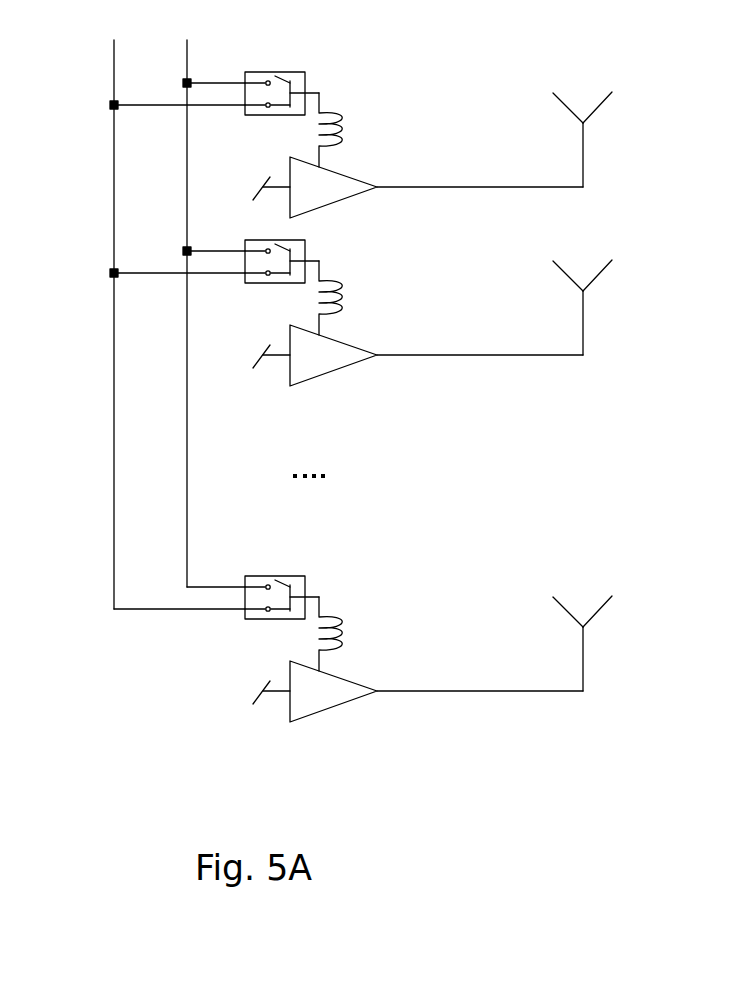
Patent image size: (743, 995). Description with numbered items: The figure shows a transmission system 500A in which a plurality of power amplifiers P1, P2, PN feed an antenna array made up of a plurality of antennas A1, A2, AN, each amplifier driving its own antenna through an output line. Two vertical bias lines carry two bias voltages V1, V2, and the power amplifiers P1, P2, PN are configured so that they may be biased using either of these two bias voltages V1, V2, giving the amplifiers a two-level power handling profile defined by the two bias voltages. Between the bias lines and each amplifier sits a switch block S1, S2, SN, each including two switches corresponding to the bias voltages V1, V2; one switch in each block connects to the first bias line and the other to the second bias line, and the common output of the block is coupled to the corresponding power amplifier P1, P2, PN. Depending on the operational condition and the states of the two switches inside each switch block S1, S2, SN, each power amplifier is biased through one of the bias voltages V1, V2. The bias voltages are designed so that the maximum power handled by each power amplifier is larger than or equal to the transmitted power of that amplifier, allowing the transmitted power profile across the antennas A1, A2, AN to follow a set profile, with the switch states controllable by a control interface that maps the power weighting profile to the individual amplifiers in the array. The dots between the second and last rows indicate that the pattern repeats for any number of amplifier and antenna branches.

The transmission system 500A is at (713, 833).
The bias voltage V1 is at (153, 312).
The bias voltage V2 is at (206, 296).
The switch block S1 is at (268, 72).
The switch block S2 is at (308, 256).
The switch block SN is at (270, 575).
The power amplifier P1 is at (333, 175).
The power amplifier P2 is at (348, 343).
The power amplifier PN is at (357, 685).
The antenna A1 is at (585, 180).
The antenna A2 is at (585, 333).
The antenna AN is at (585, 675).